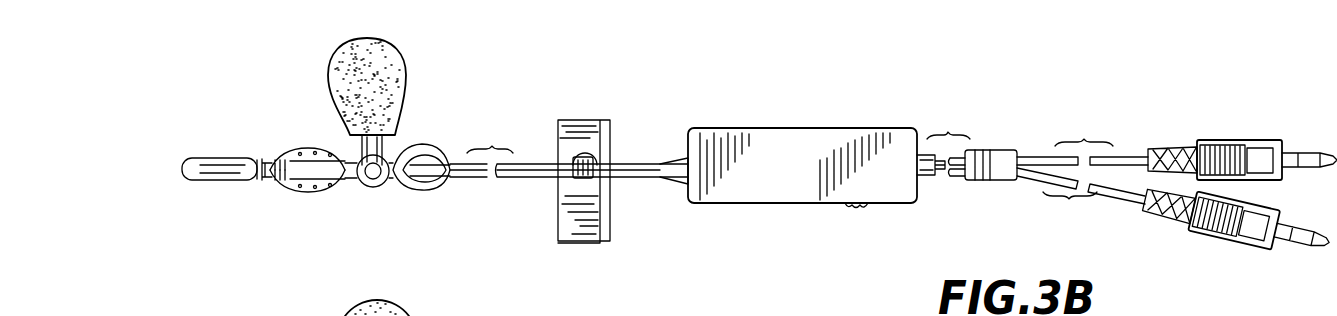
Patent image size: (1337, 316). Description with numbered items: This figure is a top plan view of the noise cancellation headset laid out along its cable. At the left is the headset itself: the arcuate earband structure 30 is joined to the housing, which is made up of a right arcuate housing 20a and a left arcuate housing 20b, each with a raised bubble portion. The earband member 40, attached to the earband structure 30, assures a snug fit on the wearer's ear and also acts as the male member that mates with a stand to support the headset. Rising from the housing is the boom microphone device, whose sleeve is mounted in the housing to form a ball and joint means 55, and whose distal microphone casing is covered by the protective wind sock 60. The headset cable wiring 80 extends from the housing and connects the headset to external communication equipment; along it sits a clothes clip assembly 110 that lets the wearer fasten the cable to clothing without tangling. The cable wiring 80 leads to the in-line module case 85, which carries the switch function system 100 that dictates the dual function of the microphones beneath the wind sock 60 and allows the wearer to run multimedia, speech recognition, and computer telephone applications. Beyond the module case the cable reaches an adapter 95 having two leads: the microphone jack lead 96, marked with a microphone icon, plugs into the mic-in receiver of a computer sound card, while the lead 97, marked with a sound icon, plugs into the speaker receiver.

The arcuate earband structure 30 is at (180, 167).
The right arcuate housing 20a is at (305, 190).
The left arcuate housing 20b is at (297, 148).
The ball and joint means 55 is at (382, 187).
The wind sock 60 is at (403, 58).
The earband member 40 is at (443, 152).
The headset cable wiring 80 is at (515, 163).
The clothes clip assembly 110 is at (603, 243).
The in-line module case 85 is at (800, 150).
The switch function system 100 is at (857, 207).
The adapter 95 is at (993, 150).
The microphone jack lead 96 is at (1290, 245).
The speaker lead 97 is at (1300, 150).